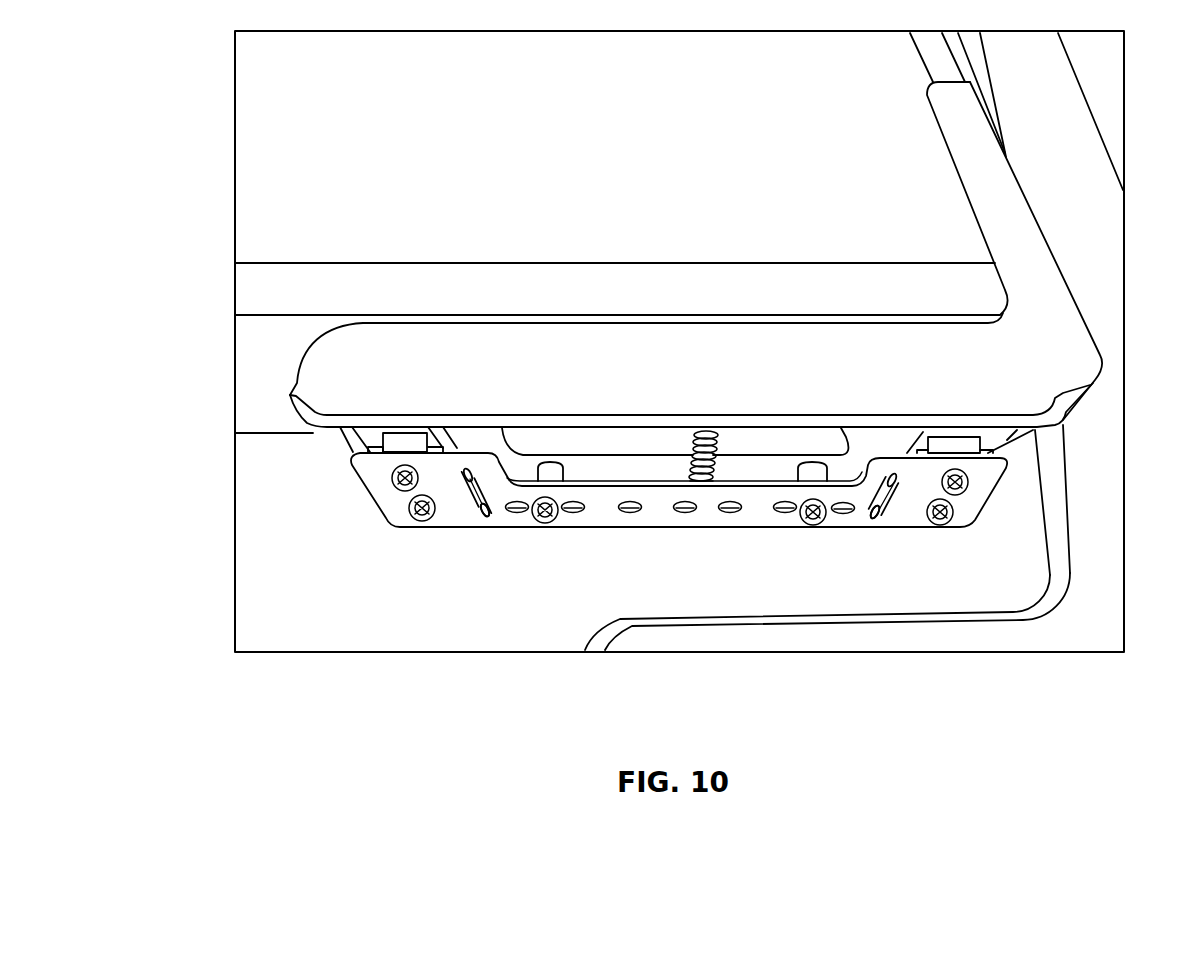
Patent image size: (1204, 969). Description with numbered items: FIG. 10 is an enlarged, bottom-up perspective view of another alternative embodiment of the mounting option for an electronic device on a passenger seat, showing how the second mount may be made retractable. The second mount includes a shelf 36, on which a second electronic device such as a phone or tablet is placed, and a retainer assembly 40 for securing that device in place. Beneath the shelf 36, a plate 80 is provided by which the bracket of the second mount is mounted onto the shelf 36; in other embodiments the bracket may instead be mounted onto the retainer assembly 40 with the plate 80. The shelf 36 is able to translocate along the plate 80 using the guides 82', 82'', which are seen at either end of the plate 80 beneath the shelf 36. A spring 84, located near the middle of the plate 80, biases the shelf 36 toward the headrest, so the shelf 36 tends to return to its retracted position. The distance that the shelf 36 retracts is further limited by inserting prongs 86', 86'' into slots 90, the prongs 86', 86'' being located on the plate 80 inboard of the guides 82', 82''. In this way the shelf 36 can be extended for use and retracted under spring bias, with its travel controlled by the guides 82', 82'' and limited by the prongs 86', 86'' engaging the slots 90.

The shelf 36 is at (320, 366).
The retainer assembly 40 is at (1005, 223).
The plate 80 is at (662, 517).
The guide 82' is at (290, 483).
The guide 82'' is at (1060, 455).
The spring 84 is at (713, 482).
The prong 86' is at (462, 626).
The prong 86'' is at (911, 625).
The slot 90 is at (463, 490).